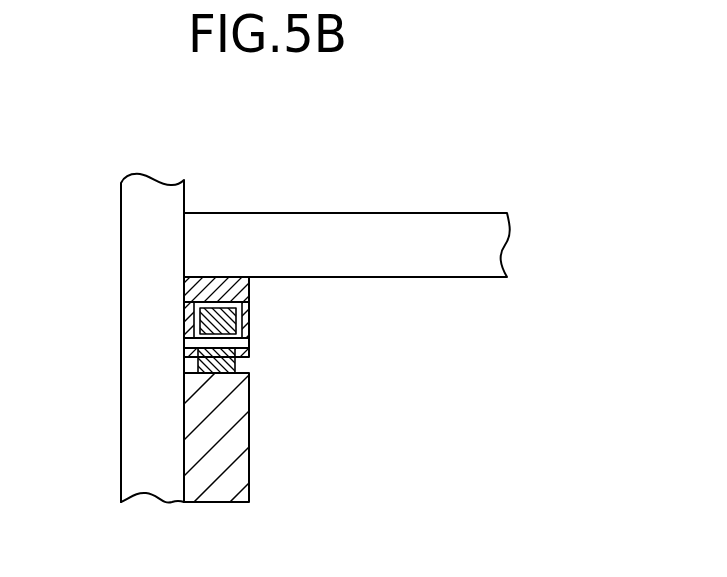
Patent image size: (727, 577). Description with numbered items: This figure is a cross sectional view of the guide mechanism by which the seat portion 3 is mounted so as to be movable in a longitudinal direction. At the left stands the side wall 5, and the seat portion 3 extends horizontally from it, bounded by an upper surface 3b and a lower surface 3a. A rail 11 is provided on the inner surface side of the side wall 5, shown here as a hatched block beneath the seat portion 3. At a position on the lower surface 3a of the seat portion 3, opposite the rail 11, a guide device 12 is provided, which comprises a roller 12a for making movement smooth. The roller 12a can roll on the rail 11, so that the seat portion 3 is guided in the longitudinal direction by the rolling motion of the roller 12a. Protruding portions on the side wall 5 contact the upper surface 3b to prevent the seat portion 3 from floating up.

The side wall 5 is at (148, 313).
The seat portion 3 is at (318, 243).
The lower surface 3a is at (420, 277).
The upper surface 3b is at (418, 213).
The guide device 12 is at (200, 275).
The roller 12a is at (237, 317).
The rail 11 is at (217, 457).